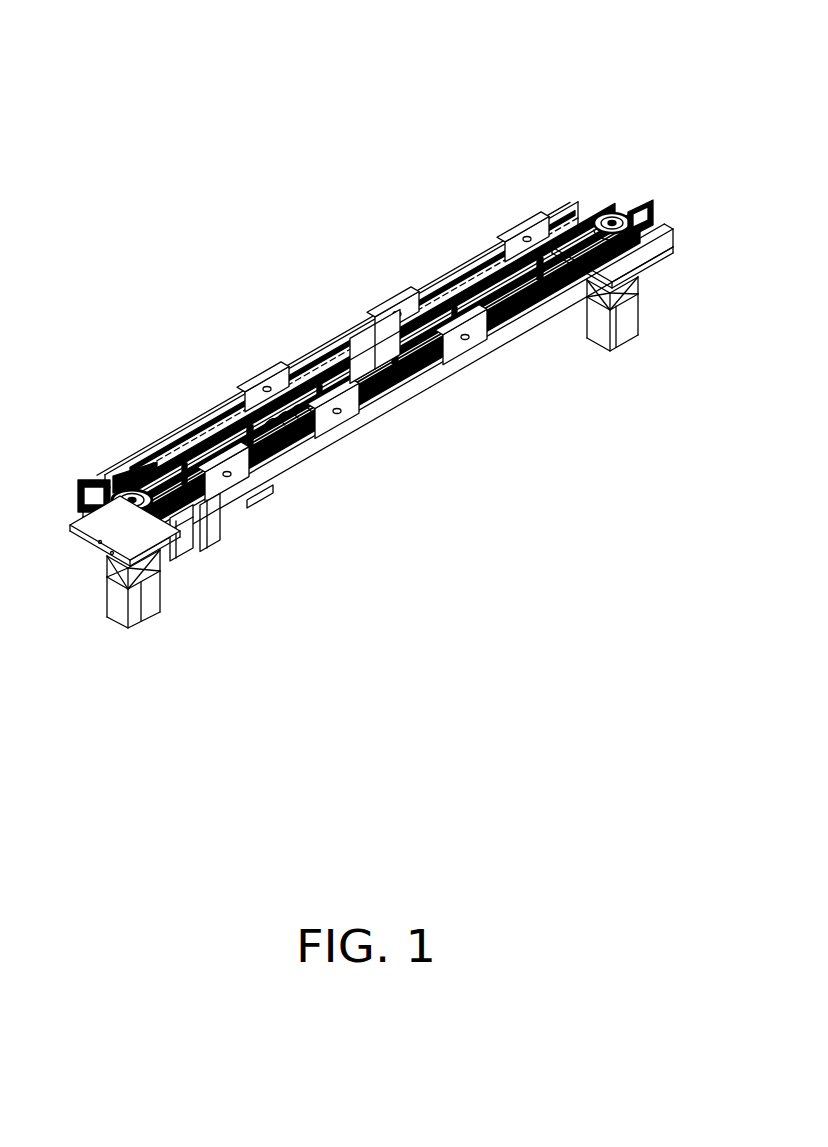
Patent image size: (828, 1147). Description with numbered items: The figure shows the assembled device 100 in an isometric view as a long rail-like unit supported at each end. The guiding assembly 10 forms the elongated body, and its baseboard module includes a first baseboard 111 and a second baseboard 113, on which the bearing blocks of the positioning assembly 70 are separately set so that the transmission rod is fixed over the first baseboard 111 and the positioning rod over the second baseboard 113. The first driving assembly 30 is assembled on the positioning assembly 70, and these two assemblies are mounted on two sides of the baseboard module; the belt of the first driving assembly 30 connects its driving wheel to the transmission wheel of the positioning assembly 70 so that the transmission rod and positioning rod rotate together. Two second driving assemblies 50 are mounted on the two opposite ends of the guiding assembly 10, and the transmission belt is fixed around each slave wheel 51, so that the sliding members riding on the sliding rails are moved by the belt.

The transferring device 100 is at (300, 88).
The guiding assembly 10 is at (423, 387).
The first baseboard 111 is at (345, 433).
The second baseboard 113 is at (467, 362).
The first driving assembly 30 is at (213, 530).
The second driving assembly 50 is at (640, 322).
The slave wheel 51 is at (636, 210).
The positioning assembly 70 is at (227, 413).